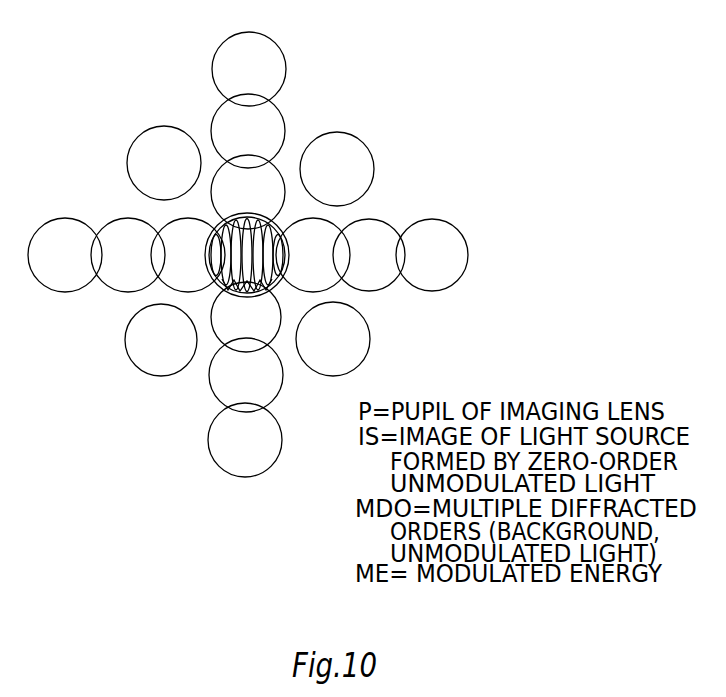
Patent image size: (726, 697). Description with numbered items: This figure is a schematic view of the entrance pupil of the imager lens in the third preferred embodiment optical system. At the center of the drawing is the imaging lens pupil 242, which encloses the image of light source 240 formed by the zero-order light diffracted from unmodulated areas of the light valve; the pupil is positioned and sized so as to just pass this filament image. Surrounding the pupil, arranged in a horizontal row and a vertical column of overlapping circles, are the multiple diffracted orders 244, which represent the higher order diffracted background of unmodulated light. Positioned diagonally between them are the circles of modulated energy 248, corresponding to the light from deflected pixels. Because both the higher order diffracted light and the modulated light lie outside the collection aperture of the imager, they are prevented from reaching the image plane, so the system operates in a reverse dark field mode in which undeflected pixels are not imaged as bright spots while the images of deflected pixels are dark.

The image of light source 240 is at (254, 242).
The imaging lens pupil 242 is at (206, 288).
The multiple diffracted orders (MDO, background unmodulated light) 244 is at (287, 73).
The modulated energy (ME) 248 is at (158, 126).